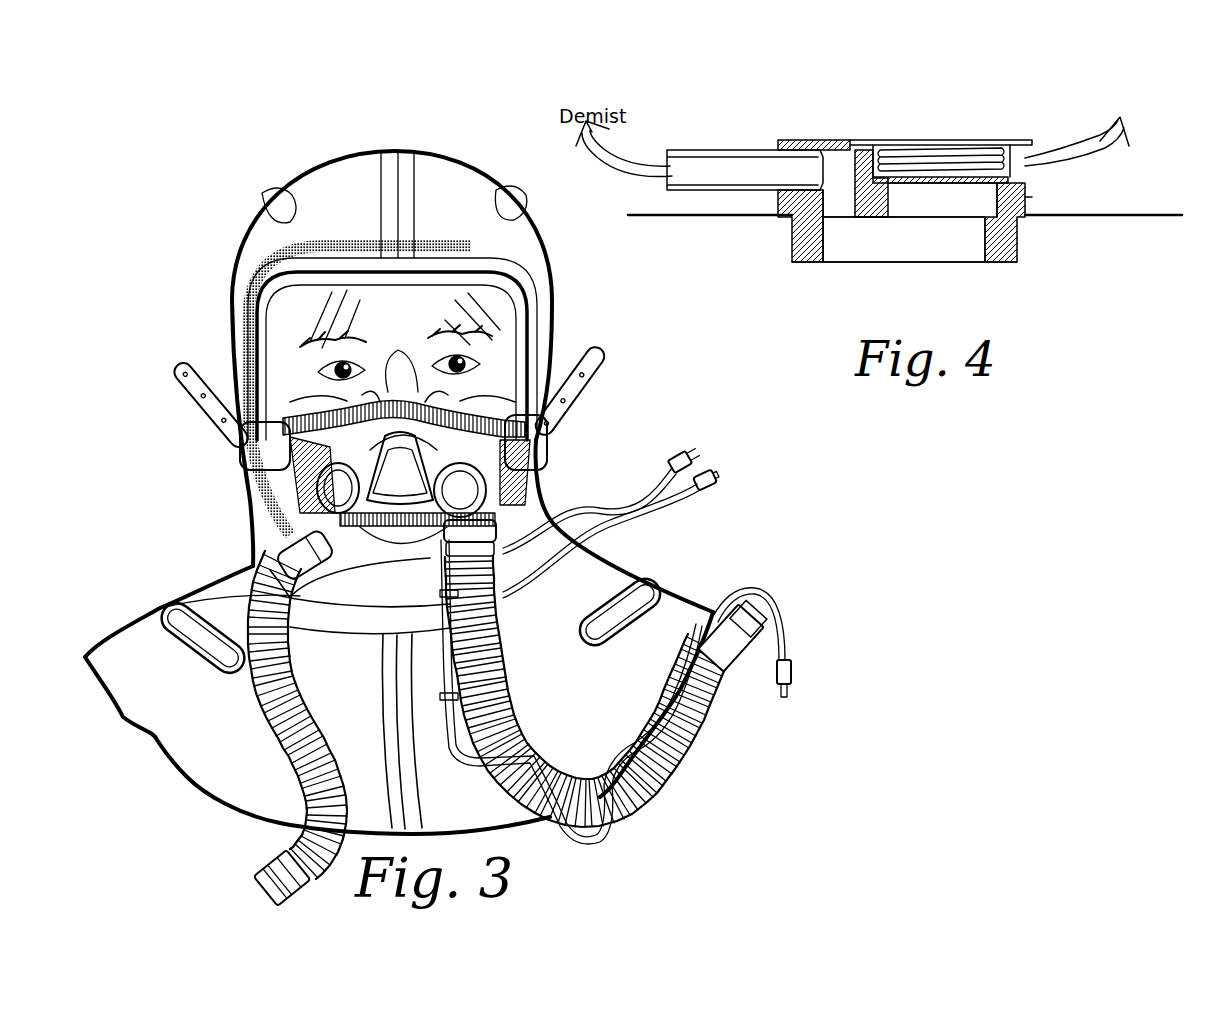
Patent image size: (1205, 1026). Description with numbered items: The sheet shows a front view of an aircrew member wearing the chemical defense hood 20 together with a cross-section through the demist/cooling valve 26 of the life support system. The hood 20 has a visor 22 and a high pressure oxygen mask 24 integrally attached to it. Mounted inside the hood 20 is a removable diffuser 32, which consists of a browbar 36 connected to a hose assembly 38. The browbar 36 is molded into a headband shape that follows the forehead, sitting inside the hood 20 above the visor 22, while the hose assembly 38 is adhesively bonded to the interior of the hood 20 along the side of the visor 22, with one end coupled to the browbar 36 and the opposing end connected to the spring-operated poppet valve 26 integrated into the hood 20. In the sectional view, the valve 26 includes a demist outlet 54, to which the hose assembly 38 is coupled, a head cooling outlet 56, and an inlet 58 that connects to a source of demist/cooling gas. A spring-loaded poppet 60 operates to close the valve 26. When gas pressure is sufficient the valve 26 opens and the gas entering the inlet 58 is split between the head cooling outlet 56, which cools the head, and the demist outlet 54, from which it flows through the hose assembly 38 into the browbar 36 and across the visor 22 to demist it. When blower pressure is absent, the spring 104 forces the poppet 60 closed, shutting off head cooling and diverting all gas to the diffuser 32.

In FIG. 3, the hood 20 is at (256, 490).
In FIG. 3, the visor 22 is at (498, 303).
In FIG. 3, the high pressure oxygen mask 24 is at (535, 458).
In FIG. 3, the demist/cooling valve 26 is at (300, 521).
In FIG. 4, the demist/cooling valve 26 is at (1027, 197).
In FIG. 3, the diffuser 32 is at (273, 257).
In FIG. 3, the browbar 36 is at (353, 240).
In FIG. 3, the hose assembly 38 is at (247, 310).
In FIG. 4, the demist outlet 54 is at (686, 172).
In FIG. 4, the head cooling outlet 56 is at (1030, 160).
In FIG. 4, the inlet 58 is at (945, 246).
In FIG. 4, the spring-loaded poppet 60 is at (925, 188).
In FIG. 4, the spring 104 is at (950, 140).